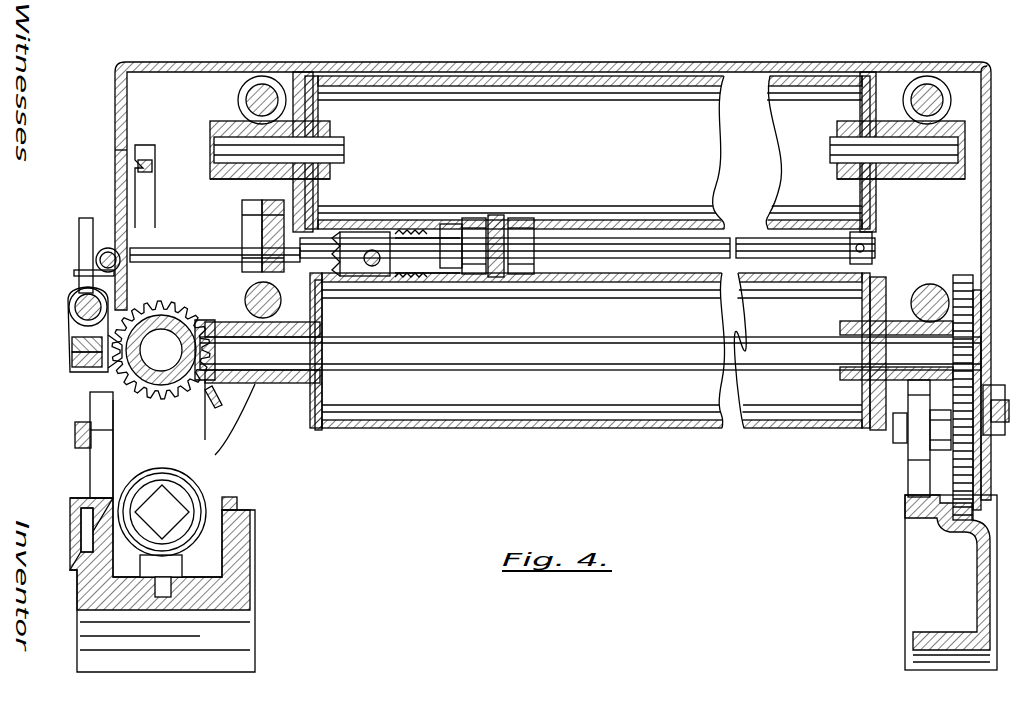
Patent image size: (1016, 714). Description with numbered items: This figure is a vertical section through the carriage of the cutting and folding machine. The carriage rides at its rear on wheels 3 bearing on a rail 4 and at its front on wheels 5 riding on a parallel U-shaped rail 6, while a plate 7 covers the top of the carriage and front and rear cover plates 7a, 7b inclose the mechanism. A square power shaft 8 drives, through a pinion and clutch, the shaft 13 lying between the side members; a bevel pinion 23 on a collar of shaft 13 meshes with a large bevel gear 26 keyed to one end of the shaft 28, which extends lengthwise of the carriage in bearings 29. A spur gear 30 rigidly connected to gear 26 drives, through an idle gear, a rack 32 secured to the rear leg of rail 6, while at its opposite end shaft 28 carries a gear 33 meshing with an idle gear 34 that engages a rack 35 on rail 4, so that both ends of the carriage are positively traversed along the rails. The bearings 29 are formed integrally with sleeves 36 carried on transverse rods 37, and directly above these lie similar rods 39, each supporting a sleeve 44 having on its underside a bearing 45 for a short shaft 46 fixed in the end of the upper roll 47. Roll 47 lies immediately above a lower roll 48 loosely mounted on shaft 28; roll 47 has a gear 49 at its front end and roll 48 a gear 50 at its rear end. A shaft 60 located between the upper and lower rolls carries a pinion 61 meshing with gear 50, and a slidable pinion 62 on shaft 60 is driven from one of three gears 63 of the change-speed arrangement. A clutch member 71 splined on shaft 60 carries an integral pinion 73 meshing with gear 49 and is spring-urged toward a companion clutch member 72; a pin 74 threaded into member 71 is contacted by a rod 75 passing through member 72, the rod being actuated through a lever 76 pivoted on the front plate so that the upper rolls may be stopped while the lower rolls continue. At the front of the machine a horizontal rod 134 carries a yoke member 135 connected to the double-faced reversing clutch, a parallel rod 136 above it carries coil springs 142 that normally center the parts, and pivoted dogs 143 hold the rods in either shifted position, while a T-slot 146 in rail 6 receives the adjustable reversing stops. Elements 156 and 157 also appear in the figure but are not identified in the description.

The wheels 3 is at (915, 458).
The rail 4 is at (958, 470).
The wheels 5 is at (90, 462).
The rail 6 is at (240, 600).
The plate 7 is at (468, 62).
The front cover plate 7a is at (116, 145).
The rear cover plate 7b is at (986, 64).
The power shaft 8 is at (190, 494).
The shaft 13 is at (150, 384).
The bevel pinion 23 is at (160, 386).
The bevel gear 26 is at (208, 410).
The shaft 28 is at (432, 360).
The bearings 29 is at (268, 383).
The spur gear 30 is at (240, 384).
The rack 32 is at (238, 500).
The gear 33 is at (962, 283).
The idle gear 34 is at (908, 497).
The rack 35 is at (960, 520).
The sleeves 36 is at (300, 308).
The transverse rods 37 is at (320, 330).
The rods 39 is at (240, 118).
The sleeve 44 is at (247, 92).
The bearing 45 is at (225, 180).
The short shaft 46 is at (330, 148).
The roll 47 is at (645, 93).
The roll 48 is at (535, 428).
The gear 49 is at (285, 76).
The gear 50 is at (875, 430).
The shaft 60 is at (582, 240).
The pinion 61 is at (848, 242).
The pinion 62 is at (496, 214).
The gears 63 is at (530, 220).
The clutch member 71 is at (440, 240).
The clutch member 72 is at (362, 214).
The pinion 73 is at (245, 236).
The pin 74 is at (410, 278).
The rod 75 is at (175, 262).
The lever 76 is at (153, 160).
The rod 134 is at (86, 372).
The yoke member 135 is at (78, 362).
The rod 136 is at (70, 318).
The coil springs 142 is at (80, 338).
The dog 143 is at (79, 232).
The T-slot 146 is at (81, 528).
The pin 156 is at (96, 256).
The lever 157 is at (76, 276).